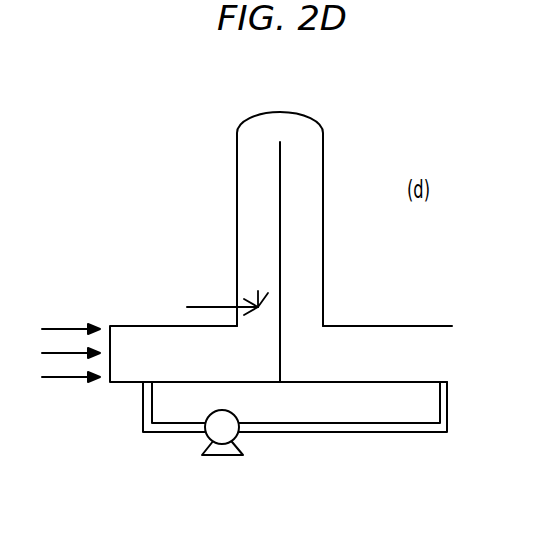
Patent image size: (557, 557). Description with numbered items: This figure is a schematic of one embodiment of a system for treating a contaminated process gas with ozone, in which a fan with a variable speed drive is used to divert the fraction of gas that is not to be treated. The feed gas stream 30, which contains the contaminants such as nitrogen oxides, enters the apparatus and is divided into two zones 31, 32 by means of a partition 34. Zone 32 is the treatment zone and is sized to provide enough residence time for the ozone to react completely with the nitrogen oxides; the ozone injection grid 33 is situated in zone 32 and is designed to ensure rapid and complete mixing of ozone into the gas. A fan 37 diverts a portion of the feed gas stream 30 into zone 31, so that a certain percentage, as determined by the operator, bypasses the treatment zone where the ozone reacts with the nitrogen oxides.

The feed gas stream 30 is at (58, 353).
The zone 31 is at (283, 428).
The zone 32 is at (155, 358).
The ozone injection grid 33 is at (255, 305).
The partition 34 is at (305, 178).
The fan 37 is at (220, 456).